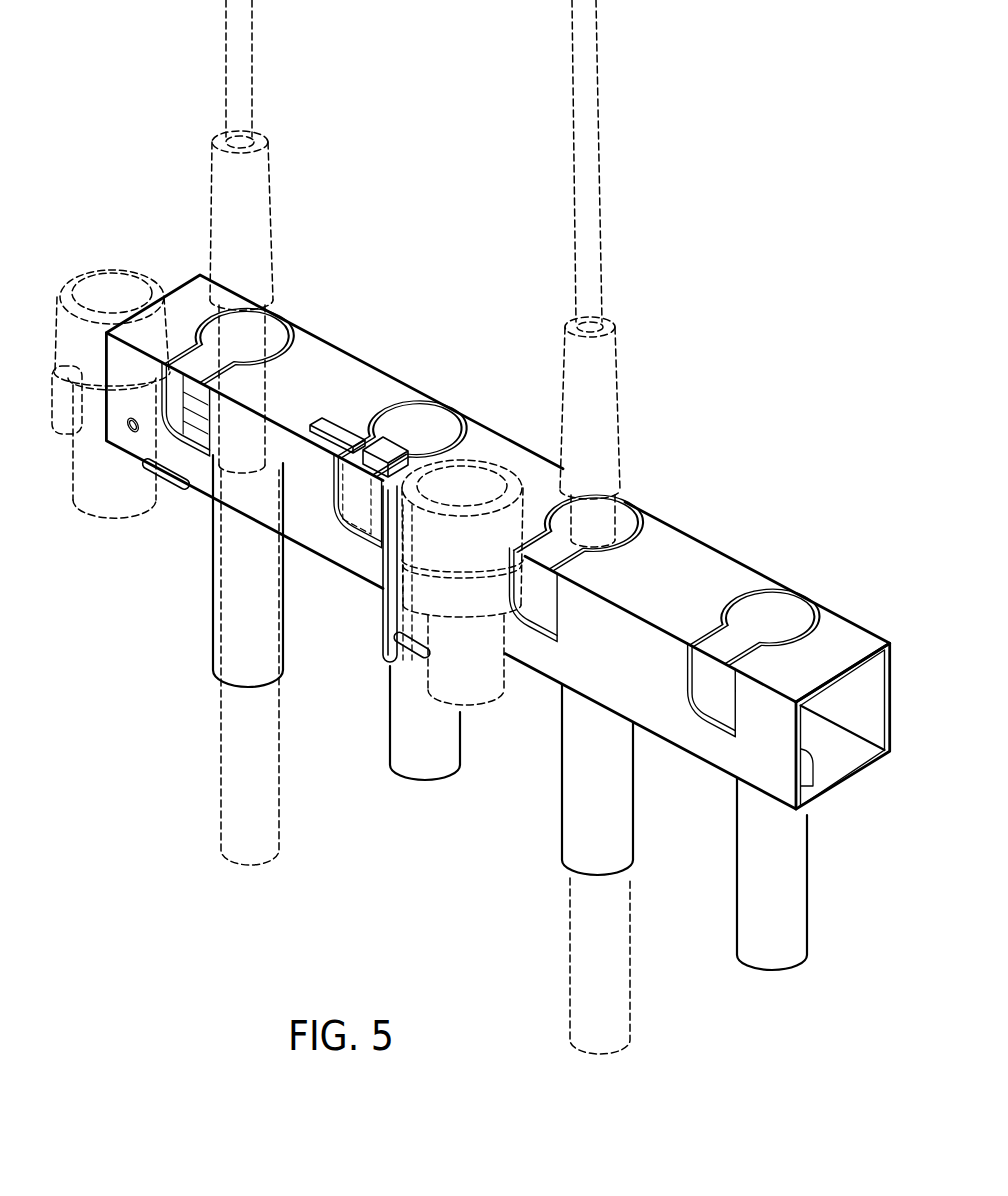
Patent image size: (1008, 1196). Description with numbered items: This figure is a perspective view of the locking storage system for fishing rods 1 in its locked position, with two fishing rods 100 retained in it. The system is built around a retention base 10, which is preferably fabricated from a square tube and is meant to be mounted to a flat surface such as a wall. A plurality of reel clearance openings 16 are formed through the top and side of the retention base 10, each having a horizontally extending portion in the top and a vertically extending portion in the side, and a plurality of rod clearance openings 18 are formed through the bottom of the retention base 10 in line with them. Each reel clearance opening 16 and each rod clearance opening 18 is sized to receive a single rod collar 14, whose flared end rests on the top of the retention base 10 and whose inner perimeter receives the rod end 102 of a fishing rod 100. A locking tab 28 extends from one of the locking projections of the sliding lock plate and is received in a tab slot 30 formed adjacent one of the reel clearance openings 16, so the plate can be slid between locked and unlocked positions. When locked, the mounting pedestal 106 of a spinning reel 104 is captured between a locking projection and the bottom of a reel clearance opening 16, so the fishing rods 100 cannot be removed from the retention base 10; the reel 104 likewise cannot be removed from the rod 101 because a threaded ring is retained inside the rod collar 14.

The locking storage system for fishing rods 1 is at (660, 350).
The retention base 10 is at (678, 547).
The rod collar 14 is at (285, 637).
The reel clearance opening 16 is at (312, 358).
The rod clearance opening 18 is at (193, 490).
The locking tab 28 is at (413, 440).
The tab slot 30 is at (331, 422).
The fishing rod 100 is at (210, 157).
The rod 101 is at (245, 83).
The rod end 102 is at (230, 806).
The spinning reel 104 is at (498, 700).
The mounting pedestal 106 is at (523, 632).